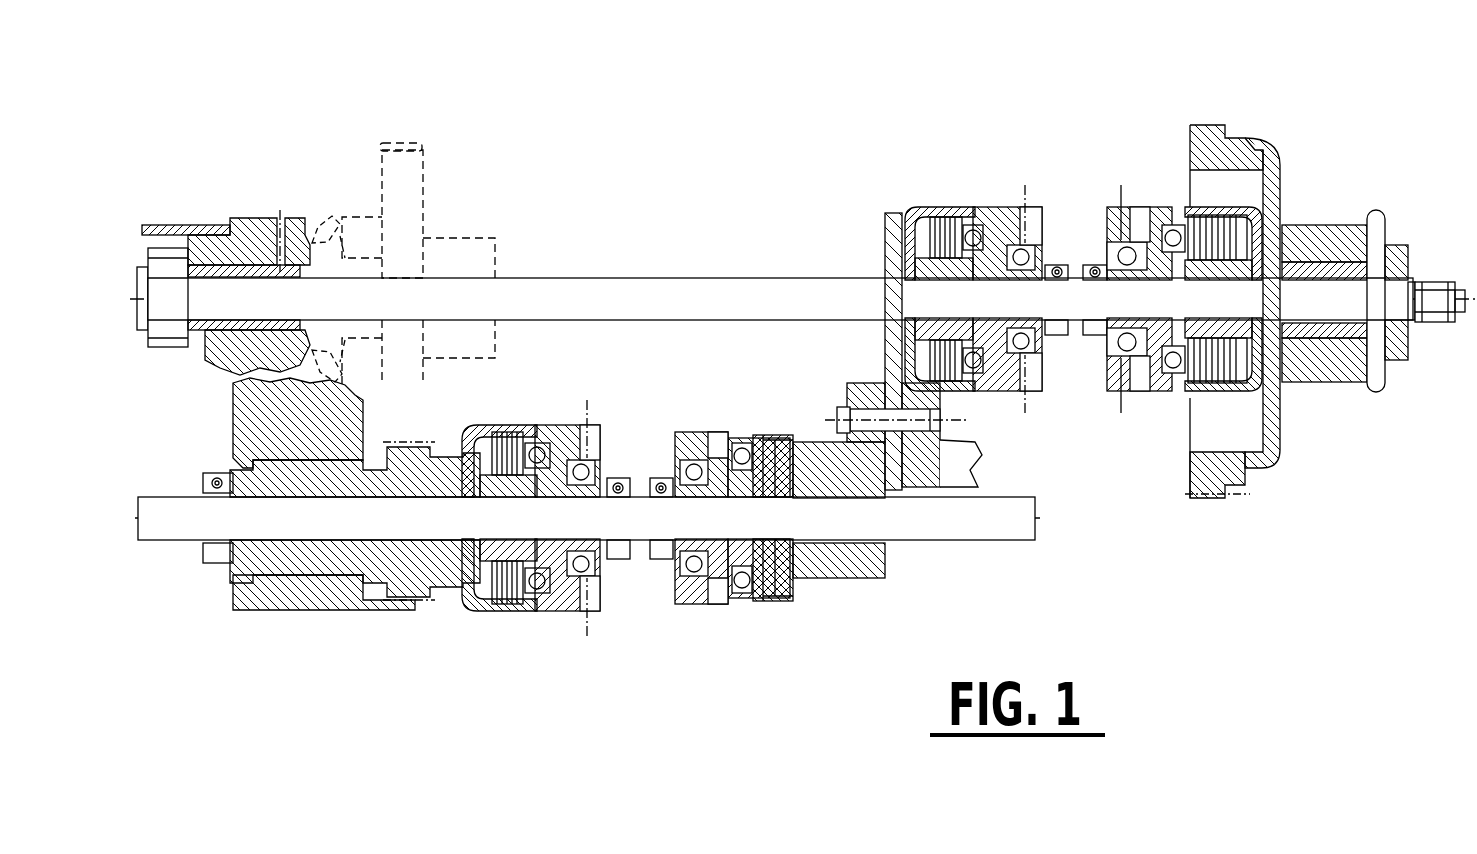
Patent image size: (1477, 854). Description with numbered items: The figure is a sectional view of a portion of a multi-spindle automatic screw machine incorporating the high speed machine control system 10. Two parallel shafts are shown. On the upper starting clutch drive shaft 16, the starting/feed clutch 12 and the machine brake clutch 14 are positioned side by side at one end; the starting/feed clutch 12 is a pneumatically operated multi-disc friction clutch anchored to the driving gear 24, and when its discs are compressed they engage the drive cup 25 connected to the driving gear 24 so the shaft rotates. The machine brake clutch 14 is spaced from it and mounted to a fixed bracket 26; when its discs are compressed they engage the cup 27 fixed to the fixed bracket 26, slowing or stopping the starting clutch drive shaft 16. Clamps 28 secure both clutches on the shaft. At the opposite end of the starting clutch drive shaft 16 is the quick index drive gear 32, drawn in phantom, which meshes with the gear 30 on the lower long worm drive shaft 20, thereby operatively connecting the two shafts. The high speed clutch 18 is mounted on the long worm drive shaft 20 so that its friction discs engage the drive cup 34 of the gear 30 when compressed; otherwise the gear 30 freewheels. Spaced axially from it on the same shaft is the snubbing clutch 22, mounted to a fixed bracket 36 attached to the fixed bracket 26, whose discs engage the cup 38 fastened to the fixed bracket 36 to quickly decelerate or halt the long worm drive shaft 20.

The high speed machine control system 10 is at (955, 114).
The starting/feed clutch 12 is at (1147, 203).
The machine brake clutch 14 is at (993, 203).
The starting clutch drive shaft 16 is at (652, 276).
The high speed clutch 18 is at (560, 422).
The long worm drive shaft 20 is at (627, 548).
The snubbing clutch 22 is at (718, 428).
The driving gear 24 is at (1272, 138).
The drive cup 25 is at (1243, 215).
The fixed bracket 26 is at (882, 212).
The cup 27 is at (920, 212).
The clamps 28 is at (1080, 265).
The gear 30 is at (441, 452).
The quick index drive gear 32 is at (423, 185).
The drive cup 34 is at (490, 430).
The fixed bracket 36 is at (850, 580).
The cup 38 is at (785, 608).